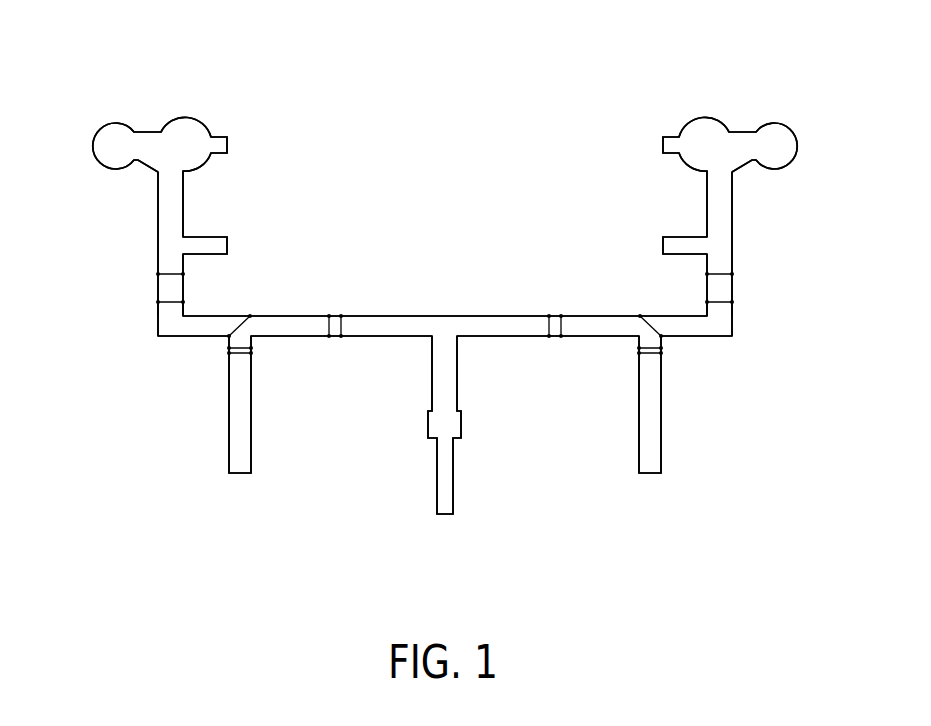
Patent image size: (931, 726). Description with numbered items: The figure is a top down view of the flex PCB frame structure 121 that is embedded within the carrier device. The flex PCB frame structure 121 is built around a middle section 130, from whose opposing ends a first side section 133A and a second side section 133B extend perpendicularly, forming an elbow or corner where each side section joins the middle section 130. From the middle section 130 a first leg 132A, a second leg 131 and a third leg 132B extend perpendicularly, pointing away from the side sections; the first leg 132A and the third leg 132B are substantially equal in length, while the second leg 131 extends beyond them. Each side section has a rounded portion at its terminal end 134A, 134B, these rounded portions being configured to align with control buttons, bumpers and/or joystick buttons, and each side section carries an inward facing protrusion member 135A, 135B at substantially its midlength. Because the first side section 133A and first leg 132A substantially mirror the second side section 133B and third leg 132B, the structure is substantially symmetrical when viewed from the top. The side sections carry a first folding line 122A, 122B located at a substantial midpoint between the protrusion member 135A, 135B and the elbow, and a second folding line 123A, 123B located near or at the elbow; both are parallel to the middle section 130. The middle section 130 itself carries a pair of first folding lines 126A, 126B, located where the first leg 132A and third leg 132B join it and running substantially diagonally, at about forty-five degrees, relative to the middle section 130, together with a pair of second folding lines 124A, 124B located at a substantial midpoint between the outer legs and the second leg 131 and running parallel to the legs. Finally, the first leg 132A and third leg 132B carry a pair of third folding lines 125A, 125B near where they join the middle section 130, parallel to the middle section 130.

The flex PCB frame structure 121 is at (409, 189).
The middle section 130 is at (407, 317).
The second leg 131 is at (444, 472).
The first leg 132A is at (239, 438).
The third leg 132B is at (649, 430).
The first side section 133A is at (172, 217).
The second side section 133B is at (717, 205).
The terminal end 134A is at (180, 150).
The terminal end 134B is at (713, 149).
The inward facing protrusion member 135A is at (213, 248).
The inward facing protrusion member 135B is at (667, 245).
The first folding line 122A is at (170, 270).
The first folding line 122B is at (719, 270).
The second folding line 123A is at (173, 305).
The second folding line 123B is at (721, 305).
The second folding line 124A is at (326, 317).
The second folding line 124B is at (535, 318).
The third folding line 125A is at (239, 352).
The third folding line 125B is at (650, 353).
The first folding line 126A is at (232, 325).
The first folding line 126B is at (655, 327).